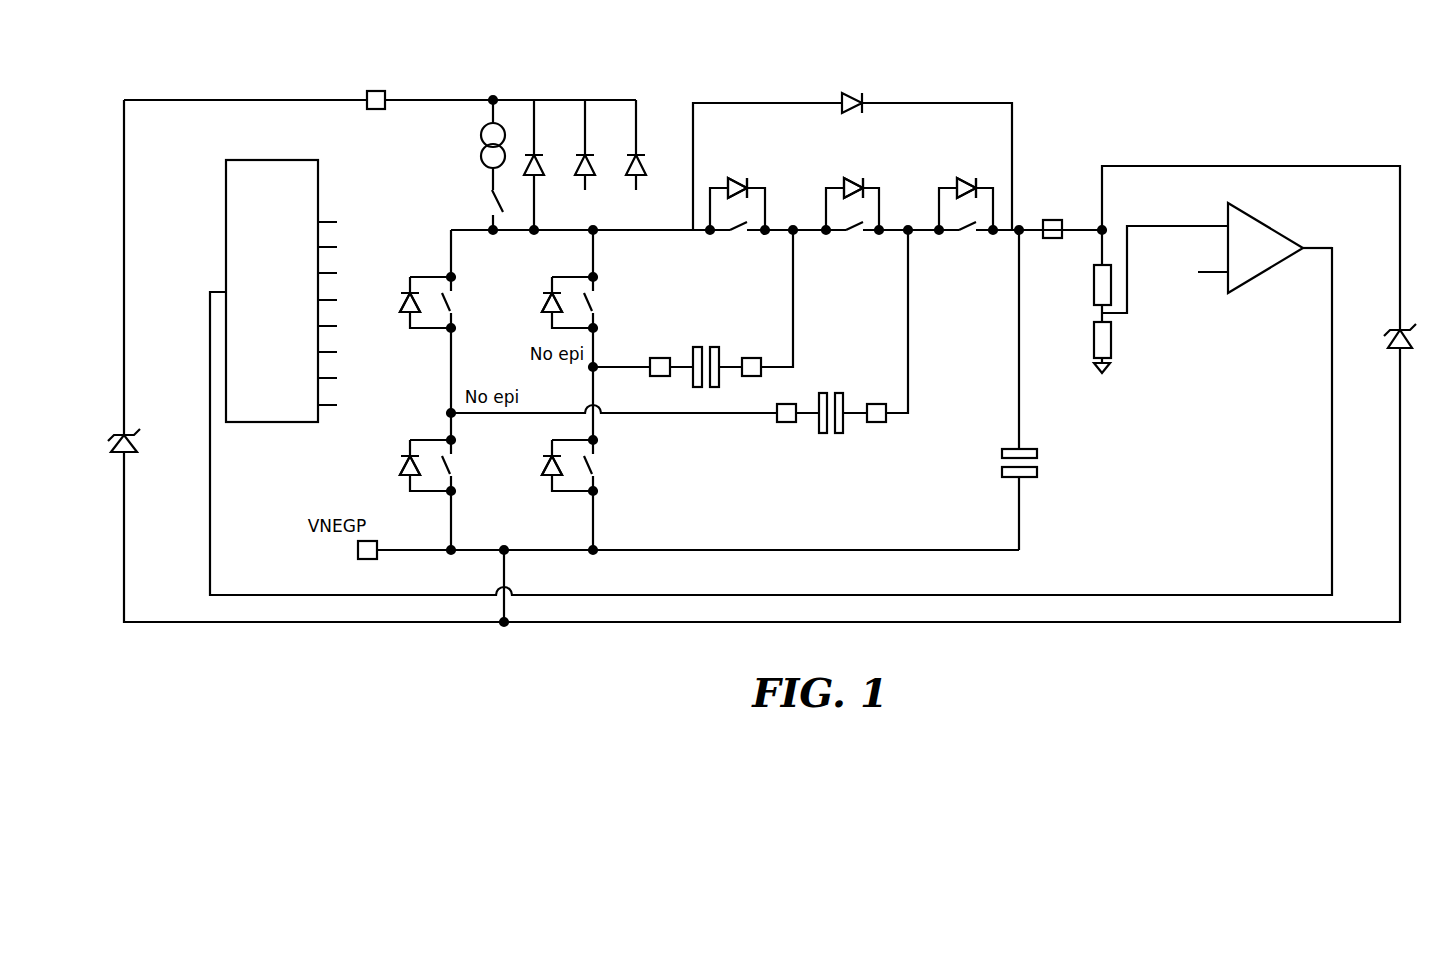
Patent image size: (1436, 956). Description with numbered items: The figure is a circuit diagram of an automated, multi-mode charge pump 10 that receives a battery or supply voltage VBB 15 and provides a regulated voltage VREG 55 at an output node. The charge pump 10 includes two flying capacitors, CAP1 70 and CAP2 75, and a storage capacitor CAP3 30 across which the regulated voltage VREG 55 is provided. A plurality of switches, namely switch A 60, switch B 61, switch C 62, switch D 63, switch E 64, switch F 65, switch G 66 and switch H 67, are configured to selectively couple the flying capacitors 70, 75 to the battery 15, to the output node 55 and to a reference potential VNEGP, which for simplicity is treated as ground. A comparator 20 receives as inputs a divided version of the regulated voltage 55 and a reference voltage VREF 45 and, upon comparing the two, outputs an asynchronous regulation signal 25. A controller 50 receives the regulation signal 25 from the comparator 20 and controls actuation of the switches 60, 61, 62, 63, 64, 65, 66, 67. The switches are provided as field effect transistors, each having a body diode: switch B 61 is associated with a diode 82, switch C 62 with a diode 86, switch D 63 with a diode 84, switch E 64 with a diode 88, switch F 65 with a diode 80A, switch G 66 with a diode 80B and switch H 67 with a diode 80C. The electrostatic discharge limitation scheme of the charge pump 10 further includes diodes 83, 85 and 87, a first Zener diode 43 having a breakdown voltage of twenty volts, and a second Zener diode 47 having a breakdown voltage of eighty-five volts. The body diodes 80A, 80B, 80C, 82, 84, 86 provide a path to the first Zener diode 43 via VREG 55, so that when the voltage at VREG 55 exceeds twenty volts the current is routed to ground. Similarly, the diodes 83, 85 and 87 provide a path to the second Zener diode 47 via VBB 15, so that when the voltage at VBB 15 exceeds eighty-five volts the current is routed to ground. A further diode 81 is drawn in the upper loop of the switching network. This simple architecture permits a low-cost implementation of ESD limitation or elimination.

The multi-mode charge pump 10 is at (1165, 109).
The supply voltage 15 is at (380, 89).
The comparator 20 is at (1262, 268).
The regulation signal 25 is at (1305, 222).
The storage capacitor 30 is at (1057, 490).
The first Zener diode 43 is at (1346, 355).
The reference voltage 45 is at (1161, 287).
The second Zener diode 47 is at (152, 482).
The controller 50 is at (226, 204).
The regulated voltage 55 is at (1043, 214).
The switch A 60 is at (447, 220).
The switch B 61 is at (410, 267).
The switch C 62 is at (618, 282).
The switch D 63 is at (408, 547).
The switch E 64 is at (550, 547).
The switch F 65 is at (727, 282).
The switch G 66 is at (842, 282).
The switch H 67 is at (957, 282).
The flying capacitor 70 is at (697, 345).
The flying capacitor 75 is at (820, 386).
The diode 80A is at (736, 182).
The diode 80B is at (850, 182).
The diode 80C is at (963, 182).
The diode 81 is at (849, 96).
The diode 82 is at (408, 313).
The diode 83 is at (528, 162).
The diode 84 is at (404, 464).
The diode 85 is at (578, 162).
The diode 86 is at (545, 302).
The diode 87 is at (629, 162).
The diode 88 is at (545, 467).